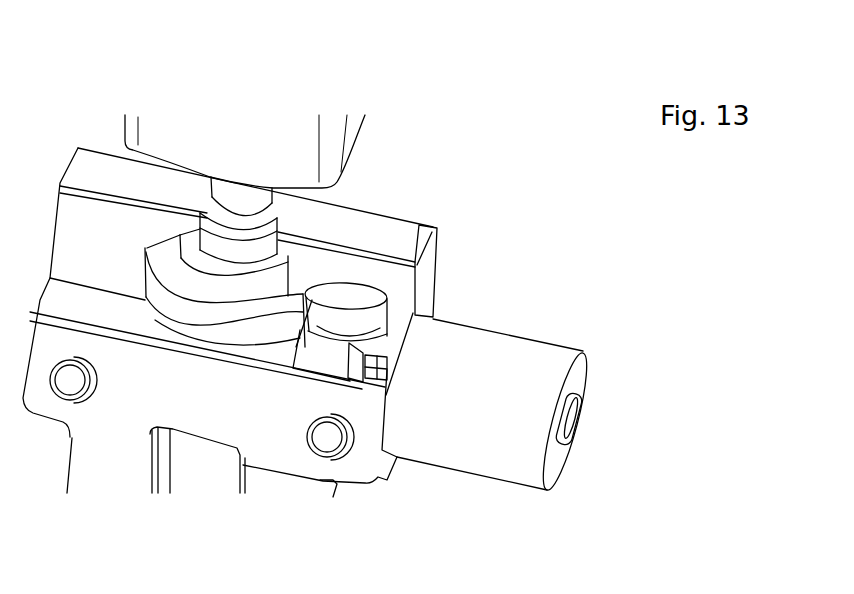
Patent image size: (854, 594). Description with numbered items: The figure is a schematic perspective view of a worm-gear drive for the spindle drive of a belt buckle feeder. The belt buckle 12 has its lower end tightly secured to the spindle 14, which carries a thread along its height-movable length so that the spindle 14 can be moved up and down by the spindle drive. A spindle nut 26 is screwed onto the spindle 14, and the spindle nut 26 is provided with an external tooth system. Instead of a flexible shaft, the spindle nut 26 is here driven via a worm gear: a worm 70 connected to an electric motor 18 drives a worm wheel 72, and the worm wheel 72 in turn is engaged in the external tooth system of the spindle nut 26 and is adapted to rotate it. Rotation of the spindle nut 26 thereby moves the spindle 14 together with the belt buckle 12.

The belt buckle 12 is at (333, 126).
The spindle 14 is at (208, 200).
The electric motor 18 is at (532, 358).
The spindle nut 26 is at (235, 285).
The worm 70 is at (327, 366).
The worm wheel 72 is at (348, 314).